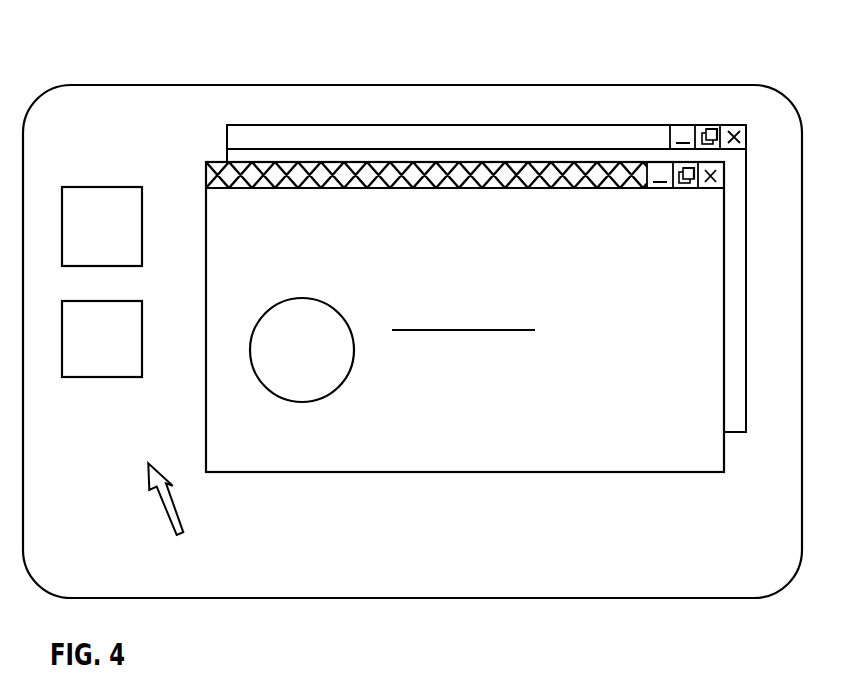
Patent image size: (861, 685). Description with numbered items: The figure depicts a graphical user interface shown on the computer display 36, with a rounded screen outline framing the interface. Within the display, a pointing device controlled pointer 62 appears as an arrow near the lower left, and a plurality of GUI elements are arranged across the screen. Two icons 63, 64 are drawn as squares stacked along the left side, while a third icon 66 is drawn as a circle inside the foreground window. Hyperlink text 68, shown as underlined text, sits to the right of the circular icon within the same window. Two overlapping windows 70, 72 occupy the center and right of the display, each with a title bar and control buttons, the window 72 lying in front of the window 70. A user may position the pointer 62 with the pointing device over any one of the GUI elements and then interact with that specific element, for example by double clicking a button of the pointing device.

The computer display 36 is at (568, 85).
The pointing device controlled pointer 62 is at (172, 528).
The icon 63 is at (140, 240).
The icon 64 is at (142, 362).
The icon 66 is at (287, 400).
The hyperlink text 68 is at (440, 330).
The window 70 is at (730, 434).
The window 72 is at (378, 474).